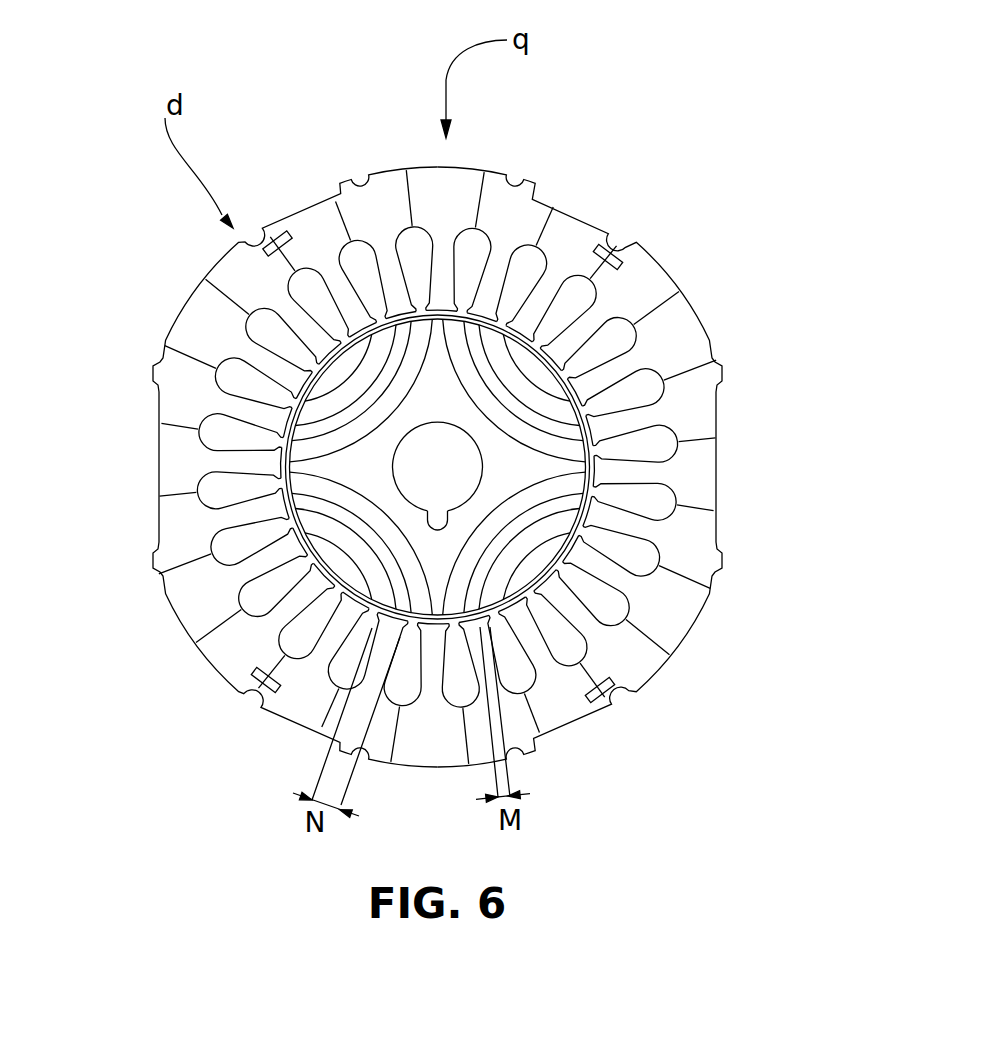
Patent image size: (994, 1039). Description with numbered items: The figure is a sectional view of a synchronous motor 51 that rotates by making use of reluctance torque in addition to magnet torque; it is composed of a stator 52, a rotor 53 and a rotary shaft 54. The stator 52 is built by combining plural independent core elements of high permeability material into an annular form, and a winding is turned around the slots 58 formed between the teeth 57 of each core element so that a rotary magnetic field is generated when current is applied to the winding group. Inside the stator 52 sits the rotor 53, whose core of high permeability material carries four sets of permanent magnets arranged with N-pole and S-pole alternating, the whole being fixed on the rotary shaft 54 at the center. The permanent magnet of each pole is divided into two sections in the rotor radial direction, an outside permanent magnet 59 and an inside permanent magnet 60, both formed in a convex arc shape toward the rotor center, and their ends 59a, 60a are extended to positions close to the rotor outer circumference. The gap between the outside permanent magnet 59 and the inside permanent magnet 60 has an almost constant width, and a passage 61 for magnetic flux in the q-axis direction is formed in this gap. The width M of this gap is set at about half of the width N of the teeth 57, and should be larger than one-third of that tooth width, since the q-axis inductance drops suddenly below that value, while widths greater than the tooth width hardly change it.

The synchronous motor 51 is at (441, 404).
The stator 52 is at (337, 188).
The rotor 53 is at (571, 362).
The rotary shaft 54 is at (452, 488).
The teeth 57 is at (345, 300).
The slots 58 is at (262, 326).
The outside permanent magnet 59 is at (575, 372).
The ends of outside permanent magnet 59a is at (530, 340).
The inside permanent magnet 60 is at (544, 360).
The ends of inside permanent magnet 60a is at (492, 332).
The passage of magnetic flux 61 is at (595, 230).